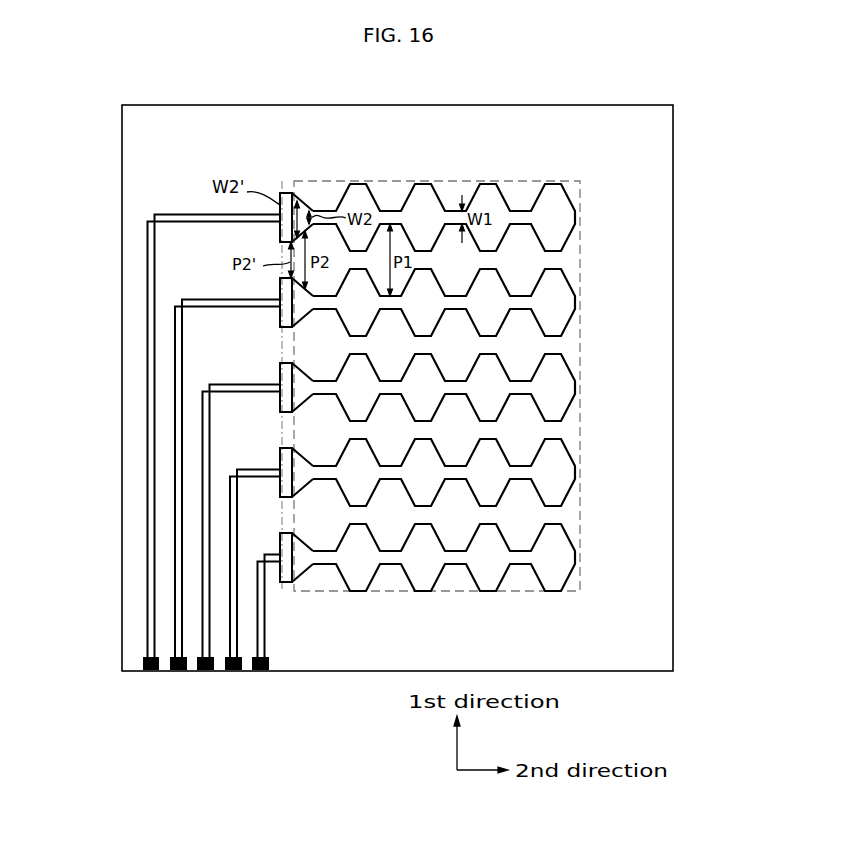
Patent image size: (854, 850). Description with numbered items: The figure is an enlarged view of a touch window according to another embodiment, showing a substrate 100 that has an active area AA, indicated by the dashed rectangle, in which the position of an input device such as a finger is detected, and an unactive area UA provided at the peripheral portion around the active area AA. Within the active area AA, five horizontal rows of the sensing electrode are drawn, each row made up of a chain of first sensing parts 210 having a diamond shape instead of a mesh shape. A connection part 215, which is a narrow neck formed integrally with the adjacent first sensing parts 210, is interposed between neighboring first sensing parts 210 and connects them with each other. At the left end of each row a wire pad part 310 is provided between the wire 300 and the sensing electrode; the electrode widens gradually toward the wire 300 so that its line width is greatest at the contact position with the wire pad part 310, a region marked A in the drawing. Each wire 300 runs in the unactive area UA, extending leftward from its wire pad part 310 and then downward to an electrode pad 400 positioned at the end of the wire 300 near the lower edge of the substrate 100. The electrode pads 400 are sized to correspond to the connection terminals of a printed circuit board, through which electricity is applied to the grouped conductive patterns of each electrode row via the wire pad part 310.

The substrate 100 is at (243, 162).
The first sensing part 210 is at (357, 196).
The connection part 215 is at (393, 200).
The wire 300 is at (152, 266).
The wire pad part 310 is at (287, 193).
The electrode pad 400 is at (143, 663).
The region A is at (279, 212).
The unactive area UA is at (653, 150).
The active area AA is at (565, 262).